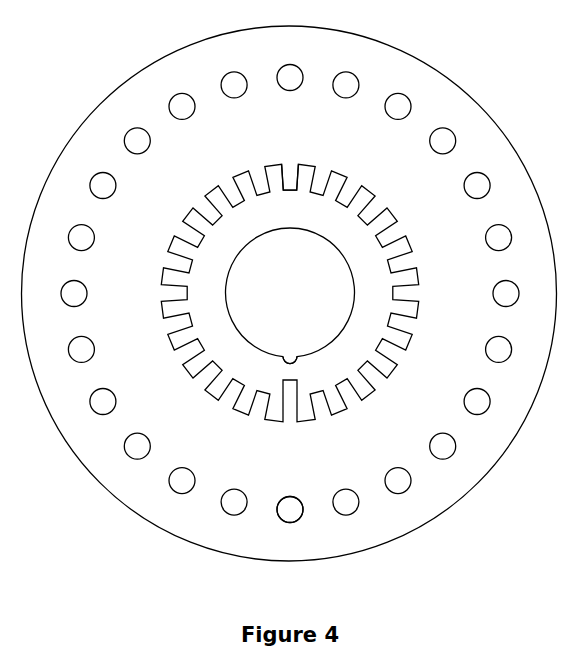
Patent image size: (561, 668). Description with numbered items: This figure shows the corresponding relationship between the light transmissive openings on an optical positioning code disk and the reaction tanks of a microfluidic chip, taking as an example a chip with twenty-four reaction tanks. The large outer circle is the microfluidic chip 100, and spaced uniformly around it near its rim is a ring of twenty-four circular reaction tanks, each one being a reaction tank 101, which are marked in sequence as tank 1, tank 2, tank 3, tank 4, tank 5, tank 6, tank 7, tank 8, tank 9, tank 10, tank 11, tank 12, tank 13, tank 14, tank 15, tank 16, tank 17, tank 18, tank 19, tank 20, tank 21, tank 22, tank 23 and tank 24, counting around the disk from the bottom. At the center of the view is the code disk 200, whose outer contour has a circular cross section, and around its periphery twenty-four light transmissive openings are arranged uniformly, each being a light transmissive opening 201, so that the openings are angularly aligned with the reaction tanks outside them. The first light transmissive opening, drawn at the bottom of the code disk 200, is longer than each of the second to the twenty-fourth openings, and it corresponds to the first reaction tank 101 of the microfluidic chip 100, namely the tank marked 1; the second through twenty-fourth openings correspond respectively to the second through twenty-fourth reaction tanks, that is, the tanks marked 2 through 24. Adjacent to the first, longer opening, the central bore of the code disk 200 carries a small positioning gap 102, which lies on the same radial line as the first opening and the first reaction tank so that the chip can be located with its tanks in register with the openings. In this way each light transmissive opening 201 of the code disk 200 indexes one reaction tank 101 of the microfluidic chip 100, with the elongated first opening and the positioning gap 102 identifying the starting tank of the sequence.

The microfluidic chip 100 is at (453, 105).
The reaction tank 101 is at (293, 505).
The positioning gap 102 is at (288, 360).
The code disk 200 is at (363, 253).
The light transmissive opening 201 is at (290, 189).
The hole 1 is at (290, 524).
The hole 2 is at (346, 516).
The hole 3 is at (398, 495).
The hole 4 is at (444, 459).
The hole 5 is at (483, 413).
The hole 6 is at (508, 355).
The hole 7 is at (516, 294).
The hole 8 is at (509, 236).
The hole 9 is at (487, 182).
The hole 10 is at (453, 134).
The hole 11 is at (400, 96).
The hole 12 is at (346, 72).
The hole 13 is at (290, 64).
The hole 14 is at (233, 72).
The hole 15 is at (176, 95).
The hole 16 is at (128, 130).
The hole 17 is at (92, 180).
The hole 18 is at (70, 235).
The hole 19 is at (62, 294).
The hole 20 is at (71, 351).
The hole 21 is at (95, 411).
The hole 22 is at (132, 456).
The hole 23 is at (178, 495).
The hole 24 is at (232, 515).